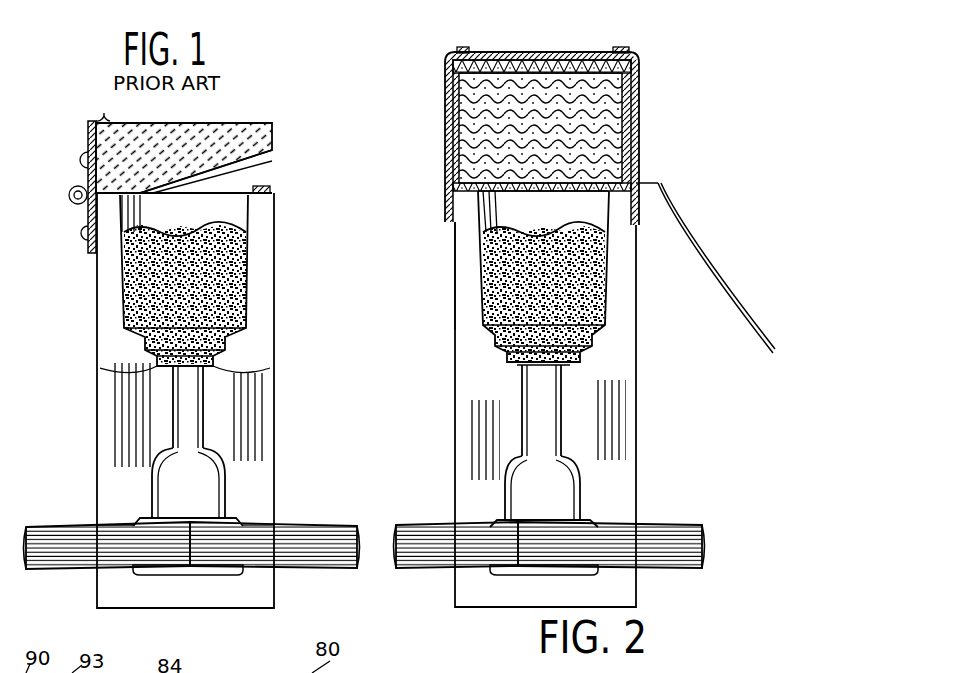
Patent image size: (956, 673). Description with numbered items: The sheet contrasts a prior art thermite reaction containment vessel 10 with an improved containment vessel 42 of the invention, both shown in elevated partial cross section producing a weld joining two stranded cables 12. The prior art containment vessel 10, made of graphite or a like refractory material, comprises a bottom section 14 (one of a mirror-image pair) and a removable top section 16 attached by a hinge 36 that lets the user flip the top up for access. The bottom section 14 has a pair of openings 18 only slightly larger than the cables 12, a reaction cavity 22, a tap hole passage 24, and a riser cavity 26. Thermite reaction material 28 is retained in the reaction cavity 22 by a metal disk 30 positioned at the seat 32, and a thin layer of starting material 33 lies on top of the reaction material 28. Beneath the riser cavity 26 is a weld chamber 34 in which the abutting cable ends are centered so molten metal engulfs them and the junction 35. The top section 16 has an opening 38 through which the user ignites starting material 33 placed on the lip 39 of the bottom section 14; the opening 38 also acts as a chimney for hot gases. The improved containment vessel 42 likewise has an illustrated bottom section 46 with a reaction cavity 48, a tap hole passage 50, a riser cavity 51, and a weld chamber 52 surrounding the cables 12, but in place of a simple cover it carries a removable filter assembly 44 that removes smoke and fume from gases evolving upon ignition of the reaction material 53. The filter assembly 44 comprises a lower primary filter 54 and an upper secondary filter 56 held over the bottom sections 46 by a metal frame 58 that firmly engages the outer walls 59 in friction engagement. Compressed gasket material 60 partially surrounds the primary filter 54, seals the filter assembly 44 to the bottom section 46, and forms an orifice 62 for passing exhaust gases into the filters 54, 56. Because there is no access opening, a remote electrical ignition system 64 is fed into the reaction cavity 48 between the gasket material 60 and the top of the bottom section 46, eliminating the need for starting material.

In FIG. 1, the containment vessel 10 is at (282, 96).
In FIG. 1, the cables 12 is at (82, 565).
In FIG. 2, the cables 12 is at (430, 566).
In FIG. 1, the bottom section 14 is at (274, 405).
In FIG. 1, the top section 16 is at (267, 143).
In FIG. 1, the openings 18 is at (112, 522).
In FIG. 1, the reaction cavity 22 is at (155, 208).
In FIG. 1, the tap hole passage 24 is at (190, 410).
In FIG. 1, the riser cavity 26 is at (205, 485).
In FIG. 1, the thermite reaction material 28 is at (245, 262).
In FIG. 1, the metal disk 30 is at (145, 370).
In FIG. 1, the seat 32 is at (225, 362).
In FIG. 1, the starting material 33 is at (248, 235).
In FIG. 1, the weld chamber 34 is at (225, 566).
In FIG. 1, the junction 35 is at (190, 520).
In FIG. 1, the hinge 36 is at (88, 175).
In FIG. 1, the opening 38 is at (268, 175).
In FIG. 1, the lip 39 is at (262, 195).
In FIG. 2, the containment vessel 42 is at (656, 44).
In FIG. 2, the filter assembly 44 is at (640, 143).
In FIG. 2, the bottom section 46 is at (637, 359).
In FIG. 2, the reaction cavity 48 is at (485, 232).
In FIG. 2, the tap hole passage 50 is at (548, 400).
In FIG. 2, the riser cavity 51 is at (565, 470).
In FIG. 2, the weld chamber 52 is at (516, 566).
In FIG. 2, the reaction material 53 is at (600, 265).
In FIG. 2, the primary filter 54 is at (630, 168).
In FIG. 2, the secondary filter 56 is at (490, 60).
In FIG. 2, the metal frame 58 is at (631, 128).
In FIG. 2, the outer walls 59 is at (455, 303).
In FIG. 2, the gasket material 60 is at (636, 100).
In FIG. 2, the orifice 62 is at (548, 191).
In FIG. 2, the remote electrical ignition system 64 is at (695, 249).